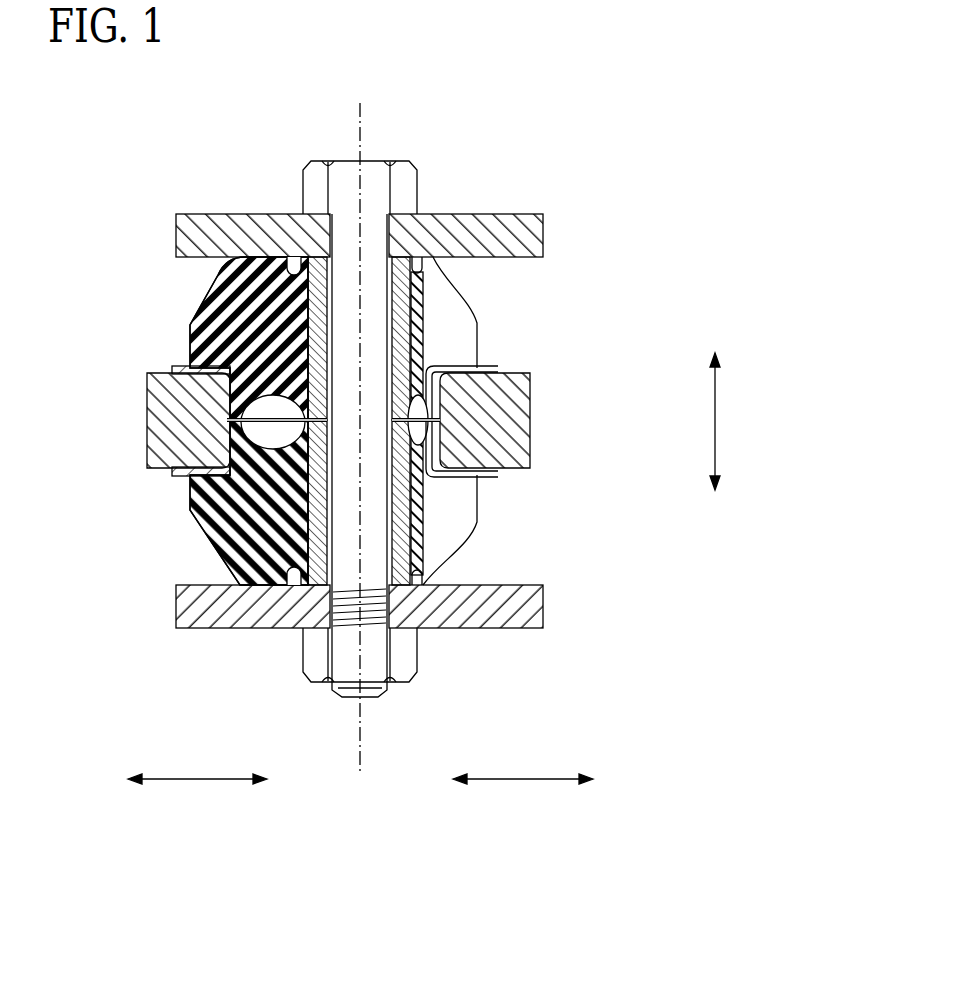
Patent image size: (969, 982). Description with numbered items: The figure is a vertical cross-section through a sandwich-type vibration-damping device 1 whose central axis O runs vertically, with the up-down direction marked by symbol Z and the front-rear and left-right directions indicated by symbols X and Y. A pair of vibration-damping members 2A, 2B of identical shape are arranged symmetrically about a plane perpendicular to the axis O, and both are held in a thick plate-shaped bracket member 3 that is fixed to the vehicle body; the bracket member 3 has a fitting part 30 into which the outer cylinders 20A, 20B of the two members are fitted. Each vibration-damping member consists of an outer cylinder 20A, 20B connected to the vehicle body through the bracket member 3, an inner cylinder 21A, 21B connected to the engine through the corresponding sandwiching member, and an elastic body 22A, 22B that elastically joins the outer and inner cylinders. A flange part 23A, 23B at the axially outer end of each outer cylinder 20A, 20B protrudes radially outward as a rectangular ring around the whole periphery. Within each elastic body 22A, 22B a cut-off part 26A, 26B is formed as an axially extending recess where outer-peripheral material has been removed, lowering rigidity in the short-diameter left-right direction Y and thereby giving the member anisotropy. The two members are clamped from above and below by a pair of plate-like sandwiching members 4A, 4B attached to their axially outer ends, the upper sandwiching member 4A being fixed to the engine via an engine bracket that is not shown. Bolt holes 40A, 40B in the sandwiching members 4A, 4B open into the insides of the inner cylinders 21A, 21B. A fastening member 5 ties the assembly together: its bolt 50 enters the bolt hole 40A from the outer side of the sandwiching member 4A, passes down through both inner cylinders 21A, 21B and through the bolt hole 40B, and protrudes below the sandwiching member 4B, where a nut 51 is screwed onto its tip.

The vibration-damping device 1 is at (527, 126).
The vibration-damping member 2A is at (492, 318).
The vibration-damping member 2B is at (492, 529).
The bracket member 3 is at (505, 397).
The sandwiching member 4A is at (545, 237).
The sandwiching member 4B is at (545, 607).
The fastening member 5 is at (387, 715).
The outer cylinder 20A is at (443, 400).
The outer cylinder 20B is at (465, 463).
The inner cylinder 21A is at (313, 330).
The inner cylinder 21B is at (315, 533).
The elastic body 22A is at (208, 300).
The elastic body 22B is at (202, 540).
The flange part 23A is at (178, 366).
The flange part 23B is at (178, 477).
The cut-off part 26A is at (452, 320).
The cut-off part 26B is at (450, 546).
The fitting part 30 is at (443, 440).
The bolt hole 40A is at (388, 215).
The bolt hole 40B is at (338, 624).
The bolt 50 is at (345, 172).
The nut 51 is at (347, 683).
The central axis O is at (364, 118).
The front-rear direction X is at (203, 779).
The left-right direction Y is at (523, 779).
The up-down direction Z is at (715, 420).